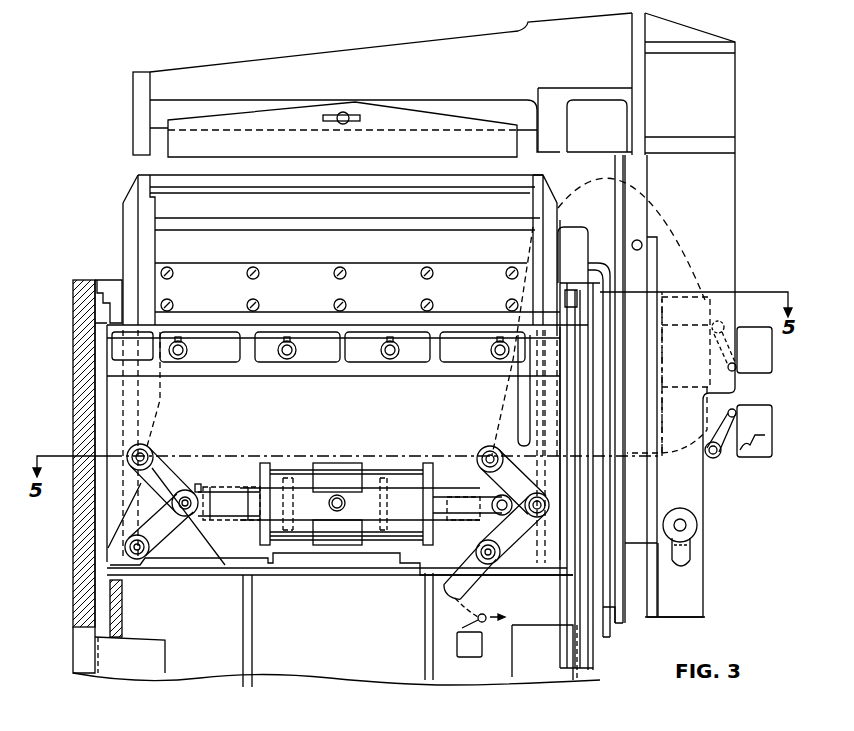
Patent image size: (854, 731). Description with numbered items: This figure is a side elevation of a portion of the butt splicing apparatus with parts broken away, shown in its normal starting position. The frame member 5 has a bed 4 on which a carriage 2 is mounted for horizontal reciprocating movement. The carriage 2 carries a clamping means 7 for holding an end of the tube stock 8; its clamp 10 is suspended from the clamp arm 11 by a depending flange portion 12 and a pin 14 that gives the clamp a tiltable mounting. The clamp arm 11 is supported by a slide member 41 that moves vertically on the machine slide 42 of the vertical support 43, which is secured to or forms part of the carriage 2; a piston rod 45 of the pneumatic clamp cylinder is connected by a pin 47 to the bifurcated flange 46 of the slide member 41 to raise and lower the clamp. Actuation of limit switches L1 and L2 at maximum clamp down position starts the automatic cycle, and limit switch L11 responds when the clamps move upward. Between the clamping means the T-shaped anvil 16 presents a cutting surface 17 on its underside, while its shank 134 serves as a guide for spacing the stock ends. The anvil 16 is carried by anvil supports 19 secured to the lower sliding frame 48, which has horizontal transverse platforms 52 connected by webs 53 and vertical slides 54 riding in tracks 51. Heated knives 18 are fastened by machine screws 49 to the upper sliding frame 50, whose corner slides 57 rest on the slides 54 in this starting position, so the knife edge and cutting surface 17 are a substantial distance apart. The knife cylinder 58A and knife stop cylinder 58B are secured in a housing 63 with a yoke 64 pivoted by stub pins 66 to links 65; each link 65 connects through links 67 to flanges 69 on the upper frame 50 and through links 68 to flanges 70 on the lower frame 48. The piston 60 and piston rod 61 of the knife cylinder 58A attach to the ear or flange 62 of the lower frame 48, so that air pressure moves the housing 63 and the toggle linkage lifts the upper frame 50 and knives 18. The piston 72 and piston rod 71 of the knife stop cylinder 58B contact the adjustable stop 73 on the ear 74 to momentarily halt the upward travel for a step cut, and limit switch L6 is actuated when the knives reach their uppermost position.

The carriage 2 is at (580, 238).
The bed 4 is at (112, 280).
The frame member 5 is at (73, 291).
The clamping means 7 is at (130, 127).
The tube stock 8 is at (124, 264).
The clamp 10 is at (268, 115).
The clamp arm 11 is at (160, 73).
The depending flange portion 12 is at (218, 110).
The pin 14 is at (346, 112).
The anvil 16 is at (137, 170).
The cutting surface 17 is at (152, 195).
The knife 18 is at (160, 240).
The anvil support 19 is at (143, 286).
The slide member 41 is at (727, 236).
The machine slide 42 is at (652, 600).
The vertical support 43 is at (712, 282).
The piston rod 45 is at (692, 565).
The bifurcated flange 46 is at (700, 492).
The pin 47 is at (688, 522).
The lower sliding frame 48 is at (178, 585).
The machine screw 49 is at (253, 280).
The upper sliding frame 50 is at (172, 373).
The track 51 is at (127, 603).
The horizontal transverse platform 52 is at (222, 578).
The web 53 is at (203, 675).
The vertical slide 54 is at (103, 612).
The slide 57 is at (102, 370).
The knife cylinder 58A is at (418, 470).
The knife stop cylinder 58B is at (300, 470).
The piston 60 is at (383, 478).
The piston rod 61 is at (430, 507).
The ear or flange 62 is at (495, 492).
The housing 63 is at (283, 462).
The yoke 64 is at (336, 463).
The link 65 is at (228, 520).
The stub pin 66 is at (346, 507).
The link 67 is at (180, 498).
The link 68 is at (172, 537).
The flange 69 is at (143, 428).
The flange 70 is at (150, 562).
The piston rod 71 is at (208, 490).
The piston 72 is at (300, 533).
The adjustable stop 73 is at (178, 463).
The ear 74 is at (158, 460).
The shank 134 is at (440, 208).
The limit switch L1 is at (765, 441).
The limit switch L2 is at (768, 416).
The limit switch L6 is at (460, 657).
The limit switch L11 is at (765, 338).